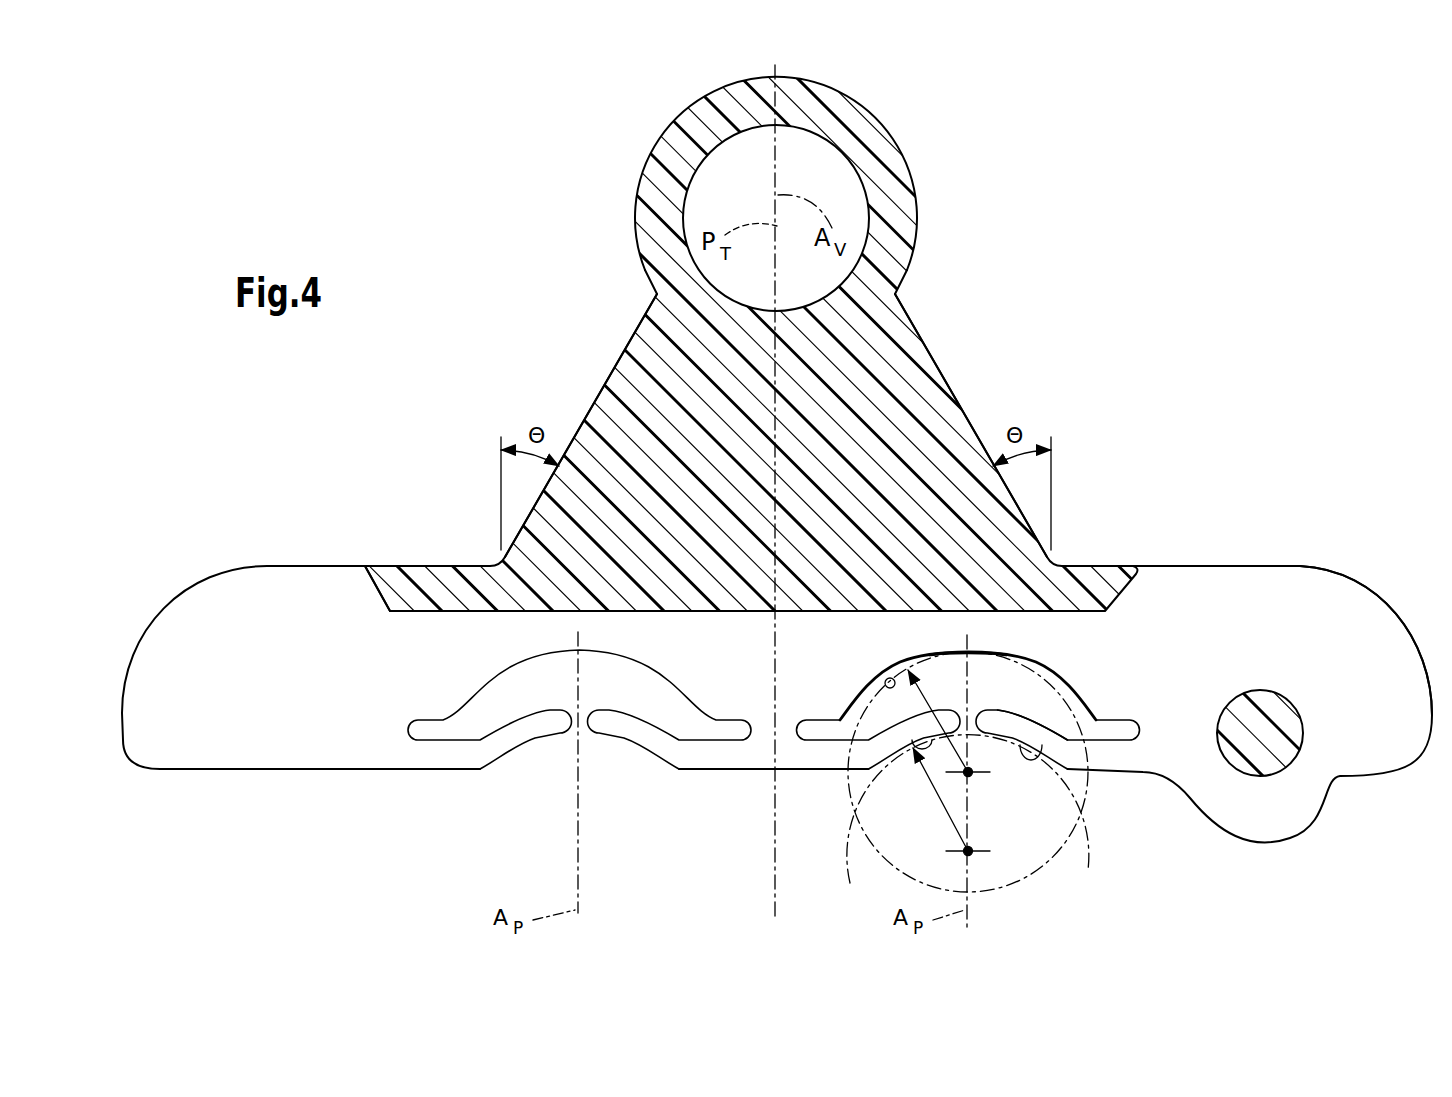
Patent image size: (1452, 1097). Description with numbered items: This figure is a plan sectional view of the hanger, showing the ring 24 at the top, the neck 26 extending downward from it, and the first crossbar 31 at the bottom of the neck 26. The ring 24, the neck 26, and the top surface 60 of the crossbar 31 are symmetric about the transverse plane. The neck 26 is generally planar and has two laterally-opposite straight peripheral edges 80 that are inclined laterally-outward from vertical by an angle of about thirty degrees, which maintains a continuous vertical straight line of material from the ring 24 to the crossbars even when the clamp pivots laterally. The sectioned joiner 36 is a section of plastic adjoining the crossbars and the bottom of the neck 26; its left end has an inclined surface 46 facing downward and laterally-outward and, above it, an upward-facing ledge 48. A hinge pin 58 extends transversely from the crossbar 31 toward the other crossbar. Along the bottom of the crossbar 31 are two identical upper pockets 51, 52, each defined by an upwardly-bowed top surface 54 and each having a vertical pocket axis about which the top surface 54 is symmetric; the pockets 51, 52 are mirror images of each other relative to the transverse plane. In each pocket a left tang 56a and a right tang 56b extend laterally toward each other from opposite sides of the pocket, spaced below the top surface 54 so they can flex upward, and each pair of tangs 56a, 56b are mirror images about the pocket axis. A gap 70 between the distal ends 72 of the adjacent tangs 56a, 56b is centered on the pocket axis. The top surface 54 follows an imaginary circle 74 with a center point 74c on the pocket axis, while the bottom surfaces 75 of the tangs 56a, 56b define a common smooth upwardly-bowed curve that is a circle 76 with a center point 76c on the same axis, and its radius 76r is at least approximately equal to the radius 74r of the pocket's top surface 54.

The ring 24 is at (905, 150).
The neck 26 is at (935, 362).
The straight peripheral edges 80 is at (948, 395).
The joiner 36 is at (428, 583).
The upward-facing ledge 48 is at (375, 565).
The inclined surface 46 is at (373, 597).
The first crossbar 31 is at (1407, 650).
The top surface 60 is at (1212, 567).
The hinge pin 58 is at (1280, 720).
The upper pocket 51 is at (542, 663).
The upper pocket 52 is at (987, 650).
The gap 70 is at (972, 708).
The distal ends 72 is at (1023, 716).
The left tang 56a is at (907, 722).
The right tang 56b is at (1043, 725).
The bottom surfaces 75 is at (908, 745).
The top surface 54 is at (885, 679).
The imaginary circle 74 is at (1090, 790).
The circle 76 is at (1090, 858).
The center point 74c is at (975, 778).
The center point 76c is at (975, 858).
The radius 74r is at (927, 695).
The radius 76r is at (935, 805).